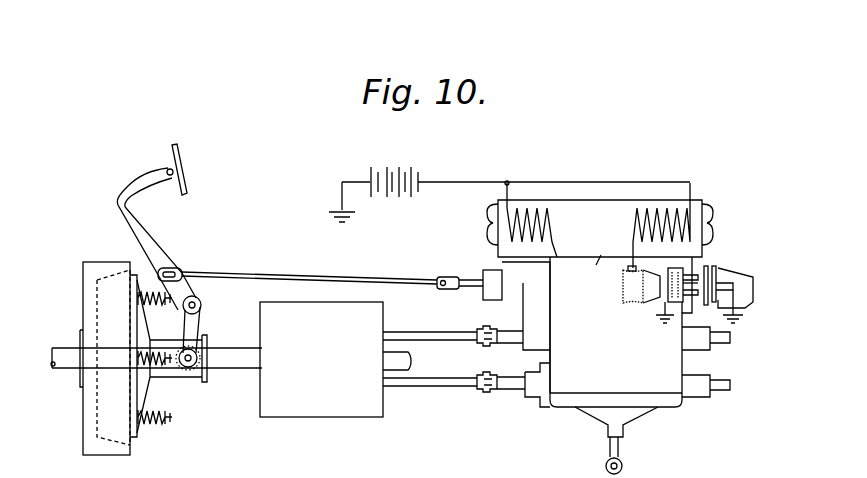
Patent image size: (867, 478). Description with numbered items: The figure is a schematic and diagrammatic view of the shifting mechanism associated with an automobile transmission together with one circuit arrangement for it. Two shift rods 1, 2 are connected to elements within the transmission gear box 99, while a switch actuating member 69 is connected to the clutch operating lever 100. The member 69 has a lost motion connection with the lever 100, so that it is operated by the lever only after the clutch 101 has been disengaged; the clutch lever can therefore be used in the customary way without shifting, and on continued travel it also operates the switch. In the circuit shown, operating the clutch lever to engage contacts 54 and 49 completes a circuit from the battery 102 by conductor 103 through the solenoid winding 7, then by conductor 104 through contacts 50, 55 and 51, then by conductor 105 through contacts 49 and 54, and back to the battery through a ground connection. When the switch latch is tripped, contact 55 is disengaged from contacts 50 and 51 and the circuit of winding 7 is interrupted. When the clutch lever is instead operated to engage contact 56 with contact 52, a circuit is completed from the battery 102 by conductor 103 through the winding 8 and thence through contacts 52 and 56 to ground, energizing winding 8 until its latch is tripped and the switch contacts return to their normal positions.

The shift rod 1 is at (515, 345).
The shift rod 2 is at (515, 393).
The solenoid winding 7 is at (552, 232).
The winding 8 is at (631, 229).
The contact 49 is at (716, 265).
The contact 50 is at (707, 265).
The contact 51 is at (682, 302).
The contact 52 is at (622, 292).
The contact 54 is at (720, 269).
The contact 55 is at (667, 296).
The contact 56 is at (627, 268).
The switch actuating member 69 is at (471, 289).
The transmission gear box 99 is at (335, 359).
The clutch operating lever 100 is at (158, 256).
The clutch 101 is at (136, 436).
The battery 102 is at (378, 200).
The conductor 103 is at (483, 186).
The conductor 104 is at (583, 268).
The conductor 105 is at (693, 305).